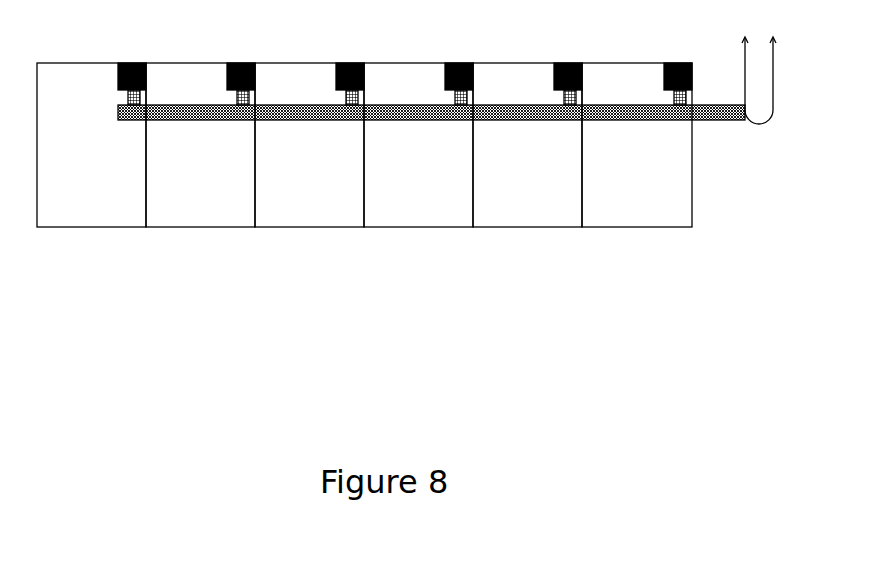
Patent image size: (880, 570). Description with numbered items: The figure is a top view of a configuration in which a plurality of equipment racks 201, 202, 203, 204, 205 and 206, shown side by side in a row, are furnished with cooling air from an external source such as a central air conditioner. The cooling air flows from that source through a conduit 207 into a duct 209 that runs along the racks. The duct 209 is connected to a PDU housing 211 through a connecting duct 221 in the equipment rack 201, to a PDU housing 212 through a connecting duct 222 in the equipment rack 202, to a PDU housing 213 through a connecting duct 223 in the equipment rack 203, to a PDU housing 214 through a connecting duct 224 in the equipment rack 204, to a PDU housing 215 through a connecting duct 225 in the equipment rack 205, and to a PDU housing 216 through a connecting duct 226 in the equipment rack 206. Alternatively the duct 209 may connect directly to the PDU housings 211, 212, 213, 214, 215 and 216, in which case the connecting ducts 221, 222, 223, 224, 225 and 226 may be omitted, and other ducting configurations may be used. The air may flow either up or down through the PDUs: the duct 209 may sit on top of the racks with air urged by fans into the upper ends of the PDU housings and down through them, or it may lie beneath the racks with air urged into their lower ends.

The equipment rack 201 is at (97, 227).
The equipment rack 202 is at (187, 227).
The equipment rack 203 is at (293, 227).
The equipment rack 204 is at (410, 227).
The equipment rack 205 is at (517, 227).
The equipment rack 206 is at (615, 227).
The conduit 207 is at (742, 73).
The duct 209 is at (703, 120).
The PDU housing 211 is at (130, 63).
The PDU housing 212 is at (237, 63).
The PDU housing 213 is at (350, 63).
The PDU housing 214 is at (455, 63).
The PDU housing 215 is at (558, 63).
The PDU housing 216 is at (668, 63).
The connecting duct 221 is at (128, 97).
The connecting duct 222 is at (237, 97).
The connecting duct 223 is at (346, 97).
The connecting duct 224 is at (455, 97).
The connecting duct 225 is at (564, 97).
The connecting duct 226 is at (674, 100).